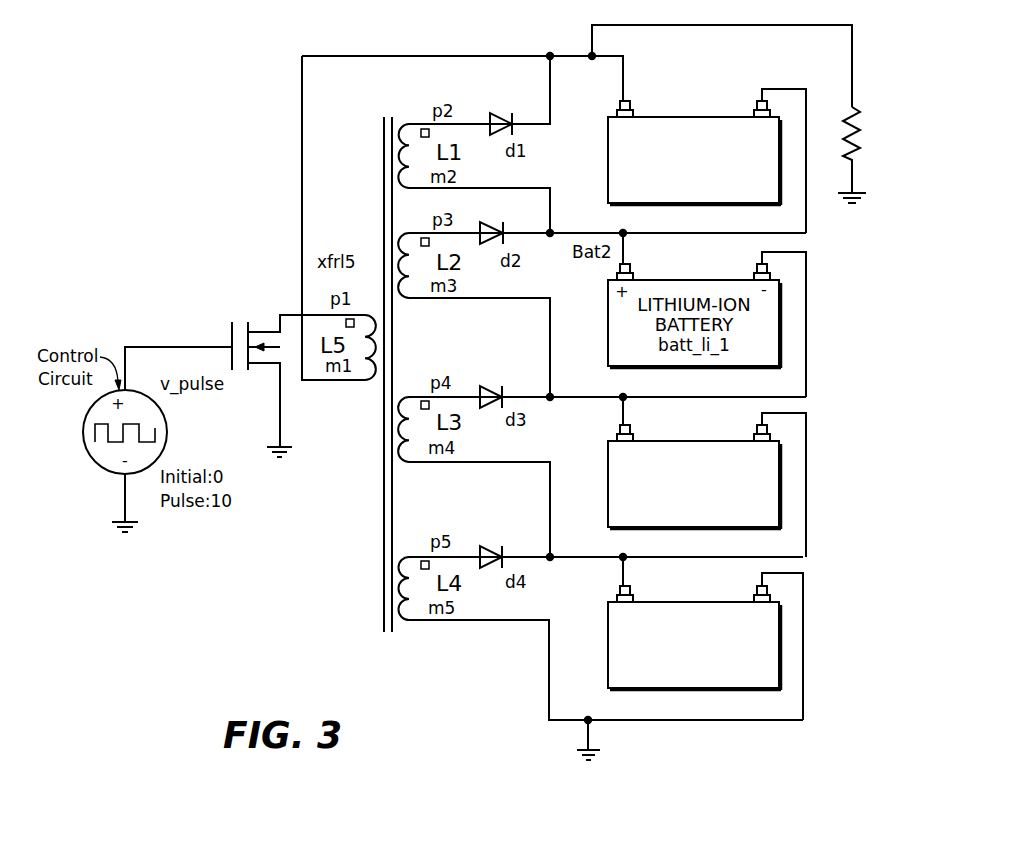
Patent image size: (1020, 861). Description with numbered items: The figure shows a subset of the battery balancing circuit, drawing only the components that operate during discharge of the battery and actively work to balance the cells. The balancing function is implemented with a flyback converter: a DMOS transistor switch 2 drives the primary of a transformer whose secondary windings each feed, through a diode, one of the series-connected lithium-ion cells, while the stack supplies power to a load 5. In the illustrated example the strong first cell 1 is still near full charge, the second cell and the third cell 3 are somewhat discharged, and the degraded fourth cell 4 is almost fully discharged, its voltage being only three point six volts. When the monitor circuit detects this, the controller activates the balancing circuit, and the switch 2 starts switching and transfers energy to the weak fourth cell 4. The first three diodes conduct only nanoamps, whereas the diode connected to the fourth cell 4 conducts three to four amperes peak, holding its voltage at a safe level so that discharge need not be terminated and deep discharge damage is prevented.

The battery cell Bat1 1 is at (690, 156).
The switch 2 is at (248, 356).
The battery cell Bat3 3 is at (689, 477).
The battery cell Bat4 4 is at (687, 638).
The load resistor 5 is at (847, 155).